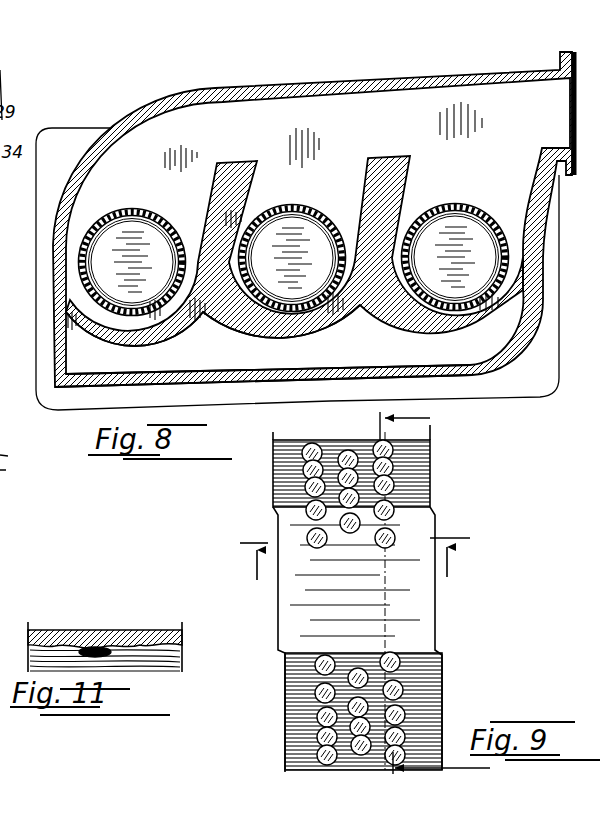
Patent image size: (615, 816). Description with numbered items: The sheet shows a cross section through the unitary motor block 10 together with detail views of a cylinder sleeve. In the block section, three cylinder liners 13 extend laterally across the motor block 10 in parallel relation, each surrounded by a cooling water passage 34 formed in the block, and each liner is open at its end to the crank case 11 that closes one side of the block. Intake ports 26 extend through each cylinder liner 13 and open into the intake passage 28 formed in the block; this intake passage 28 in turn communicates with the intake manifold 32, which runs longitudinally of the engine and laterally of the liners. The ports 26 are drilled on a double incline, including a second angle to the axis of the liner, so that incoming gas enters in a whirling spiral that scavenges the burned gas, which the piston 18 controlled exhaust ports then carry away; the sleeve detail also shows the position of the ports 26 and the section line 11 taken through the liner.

In FIG. 8, the motor block 10 is at (72, 147).
In FIG. 9, the motor block 10 is at (435, 593).
In FIG. 9, the side crank case 11 is at (354, 561).
In FIG. 8, the cylinder liner 13 is at (152, 250).
In FIG. 9, the cylinder liner 13 is at (302, 617).
In FIG. 11, the cylinder liner 13 is at (58, 610).
In FIG. 8, the piston 18 is at (133, 297).
In FIG. 8, the intake port 26 is at (162, 222).
In FIG. 9, the intake port 26 is at (304, 488).
In FIG. 11, the intake port 26 is at (143, 633).
In FIG. 8, the intake passage 28 is at (512, 200).
In FIG. 8, the intake manifold 32 is at (342, 103).
In FIG. 8, the cooling water passage 34 is at (368, 346).